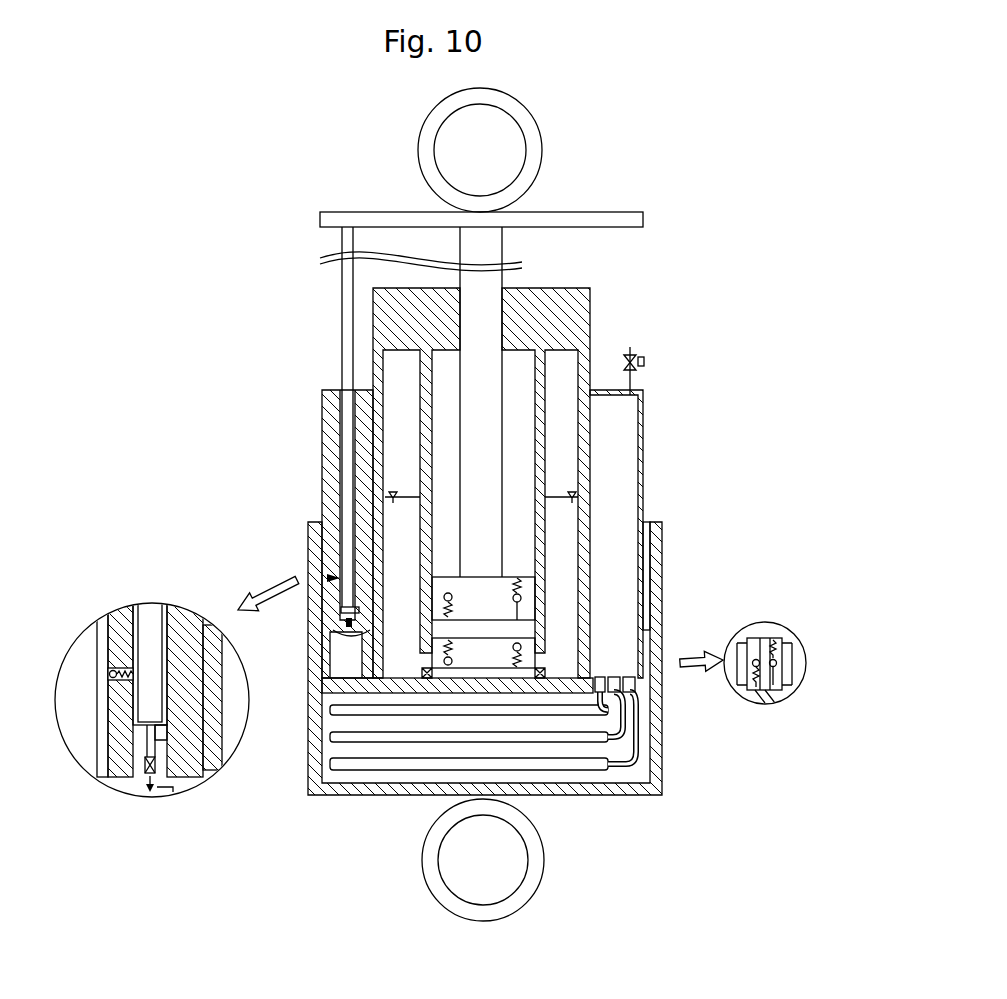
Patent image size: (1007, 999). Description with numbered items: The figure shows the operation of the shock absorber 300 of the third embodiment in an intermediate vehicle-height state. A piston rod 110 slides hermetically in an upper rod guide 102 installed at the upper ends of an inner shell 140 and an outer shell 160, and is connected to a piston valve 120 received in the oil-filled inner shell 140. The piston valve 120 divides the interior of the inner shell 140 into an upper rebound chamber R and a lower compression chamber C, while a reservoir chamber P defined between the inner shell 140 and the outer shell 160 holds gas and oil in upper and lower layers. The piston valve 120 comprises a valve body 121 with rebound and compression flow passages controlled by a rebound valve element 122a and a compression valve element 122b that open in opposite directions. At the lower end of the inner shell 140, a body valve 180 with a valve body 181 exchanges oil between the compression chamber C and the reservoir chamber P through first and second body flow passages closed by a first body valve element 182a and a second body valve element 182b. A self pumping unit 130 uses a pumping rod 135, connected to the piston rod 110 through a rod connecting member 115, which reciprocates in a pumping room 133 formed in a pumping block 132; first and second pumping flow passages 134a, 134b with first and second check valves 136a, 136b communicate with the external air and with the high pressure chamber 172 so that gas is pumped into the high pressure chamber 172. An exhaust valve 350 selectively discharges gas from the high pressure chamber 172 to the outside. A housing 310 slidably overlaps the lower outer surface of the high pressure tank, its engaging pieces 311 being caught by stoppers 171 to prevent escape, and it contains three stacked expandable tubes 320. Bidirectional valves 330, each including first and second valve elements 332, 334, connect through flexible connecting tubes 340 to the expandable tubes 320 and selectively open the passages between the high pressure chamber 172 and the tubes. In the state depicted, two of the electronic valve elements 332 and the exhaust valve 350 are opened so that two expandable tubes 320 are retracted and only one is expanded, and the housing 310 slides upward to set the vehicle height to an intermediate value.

The shock absorber 300 is at (709, 166).
The rod connecting member 115 is at (576, 212).
The piston rod 110 is at (503, 243).
The upper rod guide 102 is at (591, 316).
The inner shell 140 is at (526, 338).
The exhaust valve 350 is at (634, 346).
The reservoir chamber P is at (397, 373).
The rebound chamber R is at (596, 405).
The outer shell 160 is at (591, 429).
The pumping rod 135 is at (347, 453).
The pumping block 132 is at (333, 478).
The rebound valve element 122a is at (445, 598).
The compression valve element 122b is at (518, 576).
The piston valve 120 is at (447, 576).
The valve body 121 is at (491, 577).
The body valve 180 is at (496, 642).
The valve body 181 is at (465, 650).
The first body valve element 182a is at (444, 660).
The second body valve element 182b is at (522, 643).
The self pumping unit 130 is at (331, 610).
The pumping room 133 is at (327, 642).
The first pumping flow passage 134a is at (103, 675).
The second pumping flow passage 134b is at (141, 745).
The first check valve 136a is at (122, 666).
The second check valve 136b is at (157, 764).
The high pressure chamber 172 is at (173, 789).
The stoppers 171 is at (648, 628).
The compression chamber C is at (491, 630).
The housing 310 is at (662, 780).
The engaging pieces 311 is at (661, 523).
The expandable tubes 320 is at (330, 710).
The bidirectional valves 330 is at (616, 677).
The first valve element 332 is at (790, 661).
The second valve element 334 is at (753, 690).
The flexible connecting tubes 340 is at (613, 693).